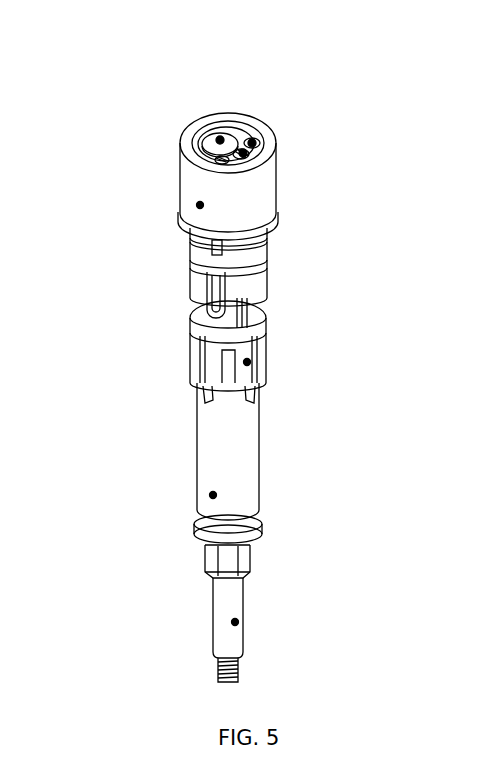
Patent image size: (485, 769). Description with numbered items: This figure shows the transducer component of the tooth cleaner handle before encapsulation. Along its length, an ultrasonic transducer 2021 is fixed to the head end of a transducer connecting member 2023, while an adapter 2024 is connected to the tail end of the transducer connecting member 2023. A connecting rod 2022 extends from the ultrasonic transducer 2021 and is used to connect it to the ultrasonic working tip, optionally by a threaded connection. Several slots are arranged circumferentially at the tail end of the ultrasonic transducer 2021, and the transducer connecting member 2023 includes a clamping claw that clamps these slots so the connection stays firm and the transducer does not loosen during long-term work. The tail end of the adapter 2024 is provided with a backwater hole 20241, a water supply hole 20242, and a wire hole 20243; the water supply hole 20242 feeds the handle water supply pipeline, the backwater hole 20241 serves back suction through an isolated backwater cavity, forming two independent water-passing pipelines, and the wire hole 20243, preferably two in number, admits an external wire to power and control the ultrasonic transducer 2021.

The ultrasonic transducer 2021 is at (213, 495).
The connecting rod 2022 is at (235, 622).
The transducer connecting member 2023 is at (247, 362).
The adapter 2024 is at (200, 205).
The backwater hole 20241 is at (220, 140).
The water supply hole 20242 is at (245, 154).
The wire hole 20243 is at (250, 141).